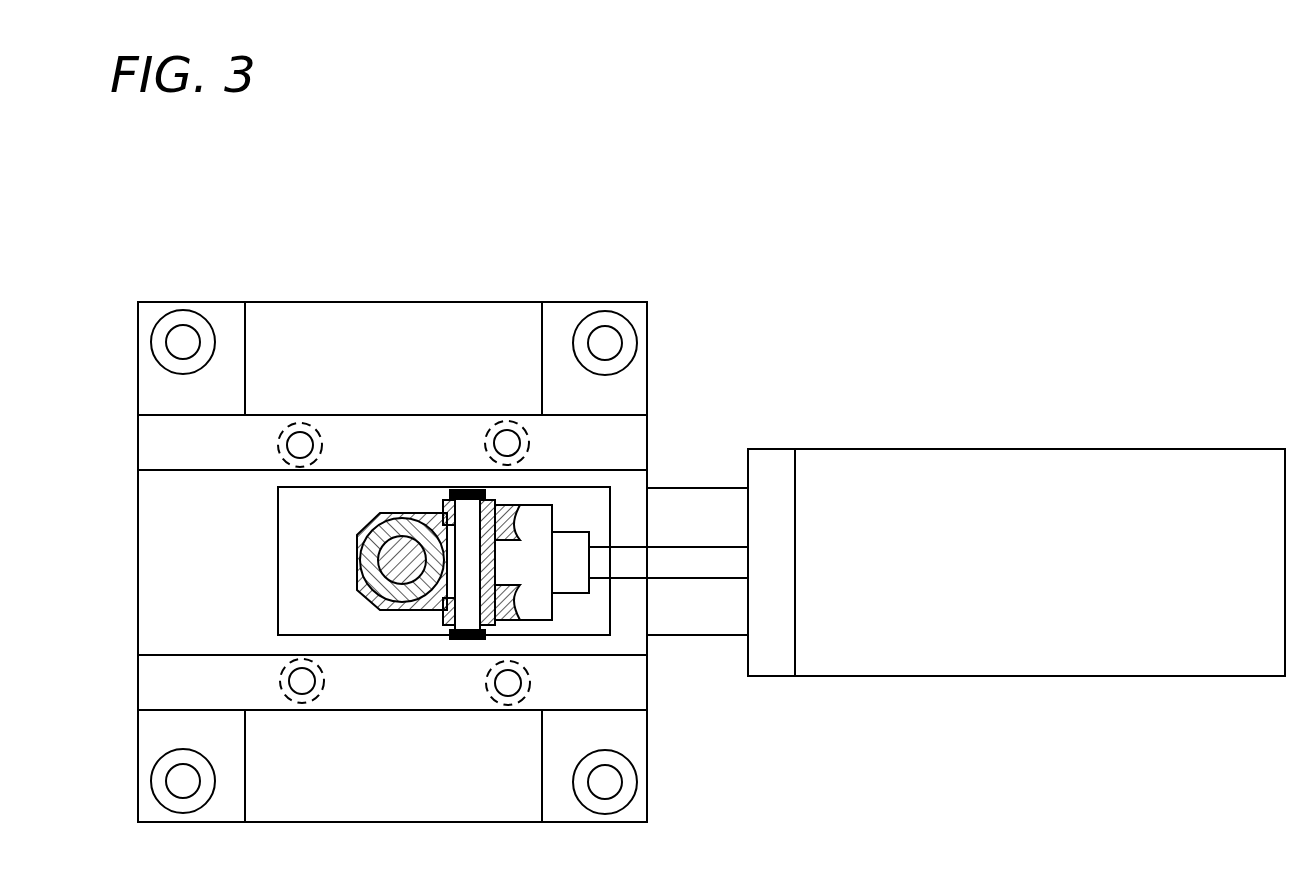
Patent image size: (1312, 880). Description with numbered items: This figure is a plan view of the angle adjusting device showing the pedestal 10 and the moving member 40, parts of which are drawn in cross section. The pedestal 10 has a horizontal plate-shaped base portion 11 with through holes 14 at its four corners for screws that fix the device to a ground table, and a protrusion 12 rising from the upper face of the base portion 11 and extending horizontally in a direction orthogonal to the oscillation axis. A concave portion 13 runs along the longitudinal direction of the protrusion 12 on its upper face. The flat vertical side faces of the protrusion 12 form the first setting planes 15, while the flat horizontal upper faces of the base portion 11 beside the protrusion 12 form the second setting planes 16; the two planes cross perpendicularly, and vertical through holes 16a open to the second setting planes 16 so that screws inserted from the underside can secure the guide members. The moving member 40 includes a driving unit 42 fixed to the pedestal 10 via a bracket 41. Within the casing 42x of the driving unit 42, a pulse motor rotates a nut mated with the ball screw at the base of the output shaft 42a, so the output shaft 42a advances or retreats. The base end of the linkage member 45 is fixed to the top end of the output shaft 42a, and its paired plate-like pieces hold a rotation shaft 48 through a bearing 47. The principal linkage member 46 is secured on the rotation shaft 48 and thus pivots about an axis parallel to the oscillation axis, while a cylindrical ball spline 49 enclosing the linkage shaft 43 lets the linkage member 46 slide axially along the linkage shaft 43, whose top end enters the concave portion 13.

The pedestal 10 is at (645, 292).
The base portion 11 is at (638, 392).
The protrusion 12 is at (578, 486).
The concave portion 13 is at (278, 612).
The through holes 14 is at (183, 338).
The first setting plane 15 is at (160, 470).
The second setting plane 16 is at (170, 432).
The vertical through hole 16a is at (300, 445).
The moving member 40 is at (806, 450).
The bracket 41 is at (732, 497).
The driving unit 42 is at (990, 660).
The output shaft 42a is at (690, 560).
The casing 42x is at (1043, 465).
The linkage shaft 43 is at (372, 560).
The linkage member 45 is at (533, 607).
The principal linkage member 46 is at (395, 514).
The bearing 47 is at (448, 612).
The rotation shaft 48 is at (470, 510).
The cylindrical ball spline 49 is at (378, 570).